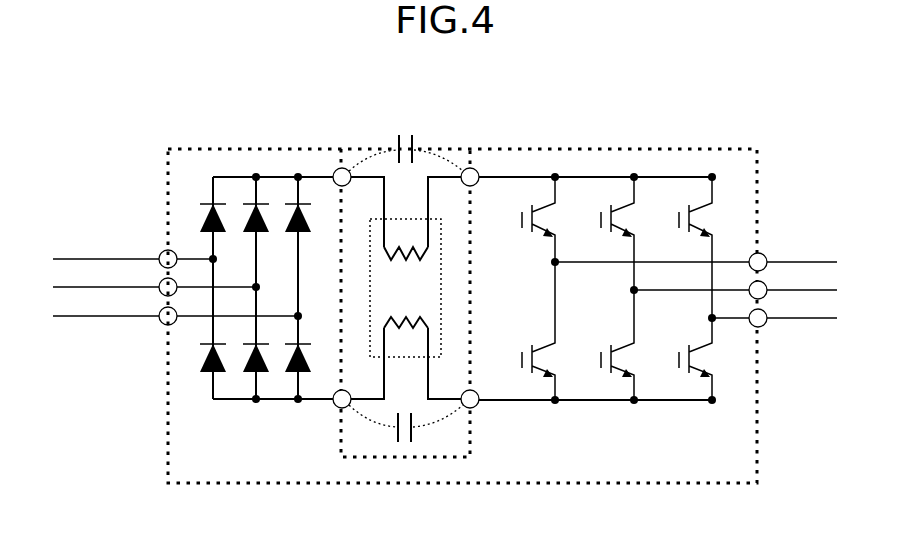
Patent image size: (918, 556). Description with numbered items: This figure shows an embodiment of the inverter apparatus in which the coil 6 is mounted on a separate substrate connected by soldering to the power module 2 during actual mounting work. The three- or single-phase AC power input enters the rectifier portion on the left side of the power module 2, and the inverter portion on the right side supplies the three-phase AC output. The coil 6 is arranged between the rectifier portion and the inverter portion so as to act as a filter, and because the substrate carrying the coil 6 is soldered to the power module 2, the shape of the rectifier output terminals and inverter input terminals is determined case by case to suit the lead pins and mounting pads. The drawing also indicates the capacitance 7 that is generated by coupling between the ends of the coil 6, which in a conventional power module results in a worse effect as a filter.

The power module 2 is at (232, 149).
The coil 6 is at (441, 286).
The capacitance 7 is at (408, 131).